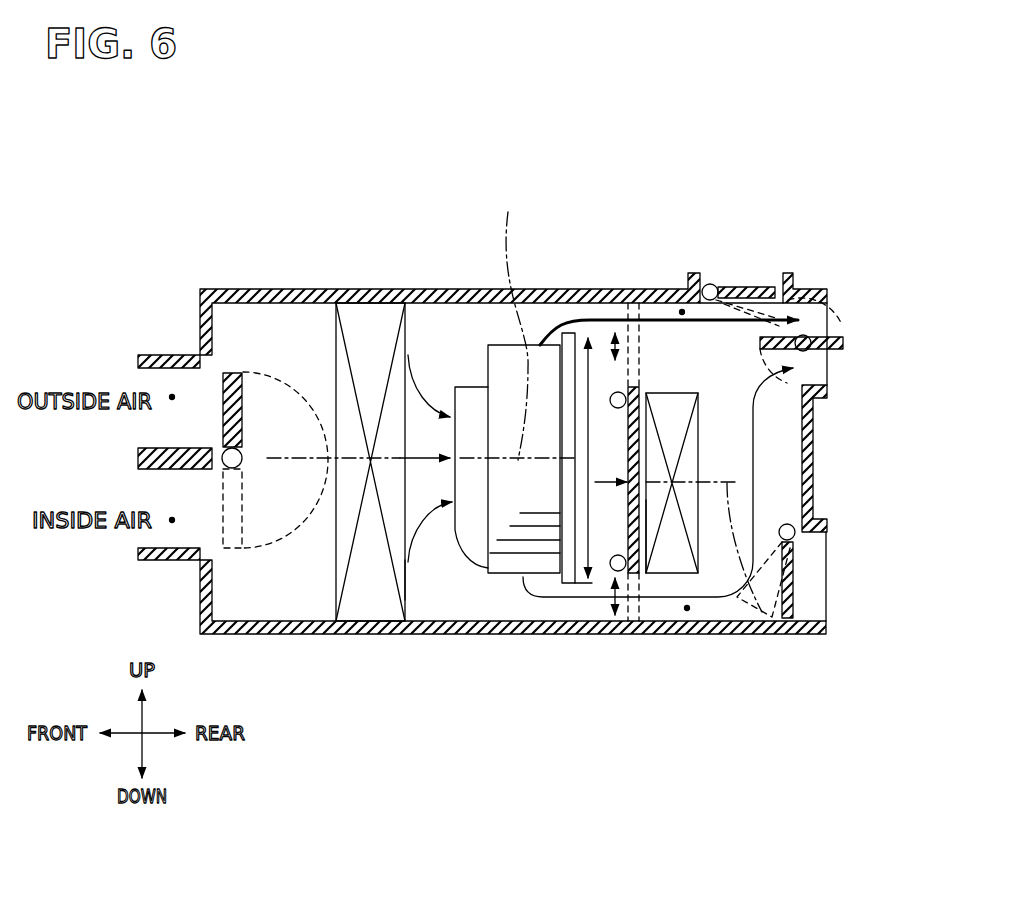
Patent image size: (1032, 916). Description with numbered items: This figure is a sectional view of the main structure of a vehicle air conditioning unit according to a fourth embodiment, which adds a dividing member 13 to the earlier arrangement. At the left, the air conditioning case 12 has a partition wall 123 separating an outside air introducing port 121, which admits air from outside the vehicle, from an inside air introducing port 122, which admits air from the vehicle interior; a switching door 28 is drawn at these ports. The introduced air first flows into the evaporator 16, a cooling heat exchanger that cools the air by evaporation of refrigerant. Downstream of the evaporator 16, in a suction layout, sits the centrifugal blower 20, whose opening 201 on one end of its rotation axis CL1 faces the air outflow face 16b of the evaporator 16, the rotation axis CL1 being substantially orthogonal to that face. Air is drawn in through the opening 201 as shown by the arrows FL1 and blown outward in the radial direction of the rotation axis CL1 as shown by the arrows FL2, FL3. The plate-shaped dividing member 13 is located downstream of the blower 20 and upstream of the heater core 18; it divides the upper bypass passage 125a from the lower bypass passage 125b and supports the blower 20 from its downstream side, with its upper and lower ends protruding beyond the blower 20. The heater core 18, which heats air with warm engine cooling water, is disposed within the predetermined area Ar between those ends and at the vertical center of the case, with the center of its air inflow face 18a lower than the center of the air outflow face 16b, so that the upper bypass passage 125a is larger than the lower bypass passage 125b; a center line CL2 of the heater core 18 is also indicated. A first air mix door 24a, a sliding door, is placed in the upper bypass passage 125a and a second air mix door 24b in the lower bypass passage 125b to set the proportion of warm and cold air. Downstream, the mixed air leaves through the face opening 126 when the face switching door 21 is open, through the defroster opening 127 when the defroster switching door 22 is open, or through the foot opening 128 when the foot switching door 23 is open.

The air conditioning case 12 is at (303, 290).
The outside air introducing port 121 is at (172, 397).
The inside air introducing port 122 is at (172, 520).
The partition wall 123 is at (170, 449).
The upper bypass passage 125a is at (682, 312).
The lower bypass passage 125b is at (687, 608).
The face opening 126 is at (836, 370).
The defroster opening 127 is at (737, 260).
The foot opening 128 is at (837, 603).
The dividing member 13 is at (573, 331).
The evaporator 16 is at (327, 586).
The air outflow face 16b is at (407, 570).
The heater core 18 is at (675, 378).
The air inflow face 18a is at (645, 500).
The blower 20 is at (507, 415).
The opening 201 is at (450, 405).
The face switching door 21 is at (842, 325).
The defroster switching door 22 is at (775, 287).
The foot switching door 23 is at (793, 560).
The first air mix door 24a is at (617, 328).
The second air mix door 24b is at (630, 538).
The inside/outside air switching door 28 is at (232, 372).
The rotation axis CL1 is at (506, 323).
The center line of heater core CL2 is at (763, 634).
The arrows indicating air drawn into blower FL1 is at (422, 530).
The arrows indicating air blown radially outward FL2 is at (627, 289).
The arrows indicating air blown radially outward FL3 is at (633, 612).
The predetermined area Ar is at (611, 467).